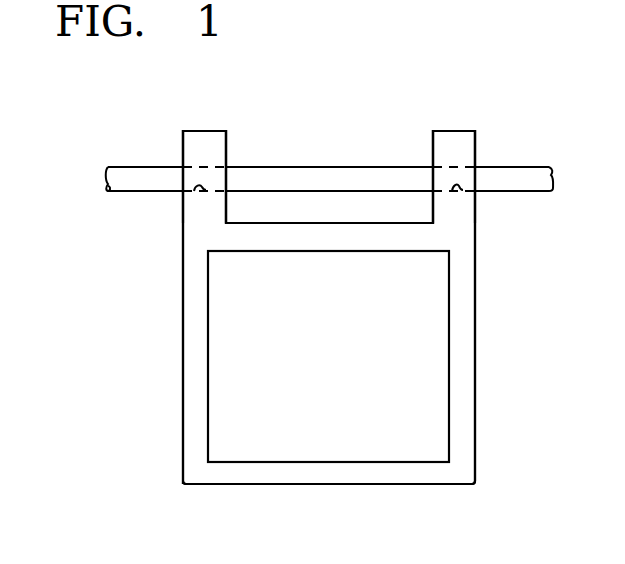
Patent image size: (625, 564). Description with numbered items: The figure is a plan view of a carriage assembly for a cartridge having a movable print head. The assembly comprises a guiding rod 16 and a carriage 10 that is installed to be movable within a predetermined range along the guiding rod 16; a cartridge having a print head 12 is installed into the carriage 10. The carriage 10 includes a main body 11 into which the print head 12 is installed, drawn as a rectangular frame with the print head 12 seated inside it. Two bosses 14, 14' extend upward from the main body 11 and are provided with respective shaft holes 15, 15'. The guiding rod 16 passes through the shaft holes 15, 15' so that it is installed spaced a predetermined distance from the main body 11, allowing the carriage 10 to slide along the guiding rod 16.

The carriage 10 is at (147, 429).
The main body 11 is at (476, 328).
The print head 12 is at (449, 418).
The boss 14 is at (204, 147).
The boss 14' is at (454, 147).
The shaft hole 15 is at (160, 211).
The shaft hole 15' is at (503, 210).
The guiding rod 16 is at (531, 165).